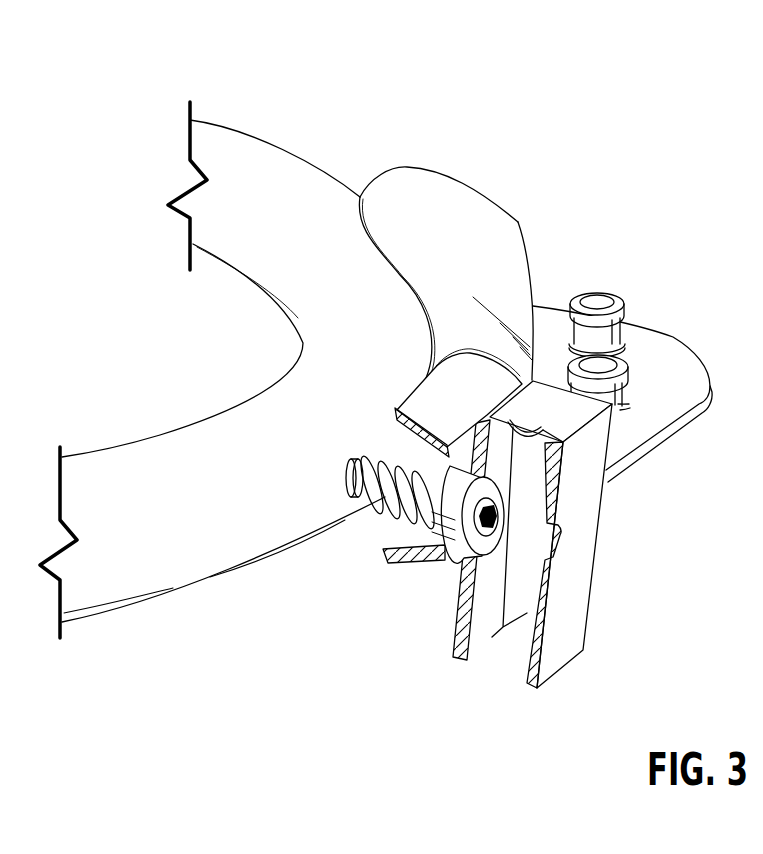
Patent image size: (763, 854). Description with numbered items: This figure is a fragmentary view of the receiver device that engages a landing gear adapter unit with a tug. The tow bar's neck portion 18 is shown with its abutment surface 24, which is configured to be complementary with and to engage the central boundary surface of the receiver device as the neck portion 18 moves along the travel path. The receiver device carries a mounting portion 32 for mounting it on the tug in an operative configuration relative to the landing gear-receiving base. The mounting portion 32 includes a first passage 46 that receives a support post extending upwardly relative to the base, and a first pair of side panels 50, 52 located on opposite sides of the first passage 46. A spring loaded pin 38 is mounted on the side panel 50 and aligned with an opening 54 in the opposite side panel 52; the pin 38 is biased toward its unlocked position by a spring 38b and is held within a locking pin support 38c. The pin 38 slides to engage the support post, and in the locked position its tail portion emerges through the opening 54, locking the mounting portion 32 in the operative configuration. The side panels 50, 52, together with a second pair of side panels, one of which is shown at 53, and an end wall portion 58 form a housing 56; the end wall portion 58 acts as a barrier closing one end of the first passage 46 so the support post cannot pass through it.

The neck portion 18 is at (106, 573).
The abutment surface 24 is at (183, 550).
The mounting portion 32 is at (665, 517).
The spring loaded pin 38 is at (329, 433).
The spring 38b is at (384, 507).
The locking pin support 38c is at (445, 527).
The first passage 46 is at (486, 680).
The side panel 50 is at (478, 635).
The side panel 52 is at (572, 620).
The side panel 53 is at (527, 612).
The opening 54 is at (560, 537).
The housing 56 is at (549, 374).
The end wall portion 58 is at (577, 420).